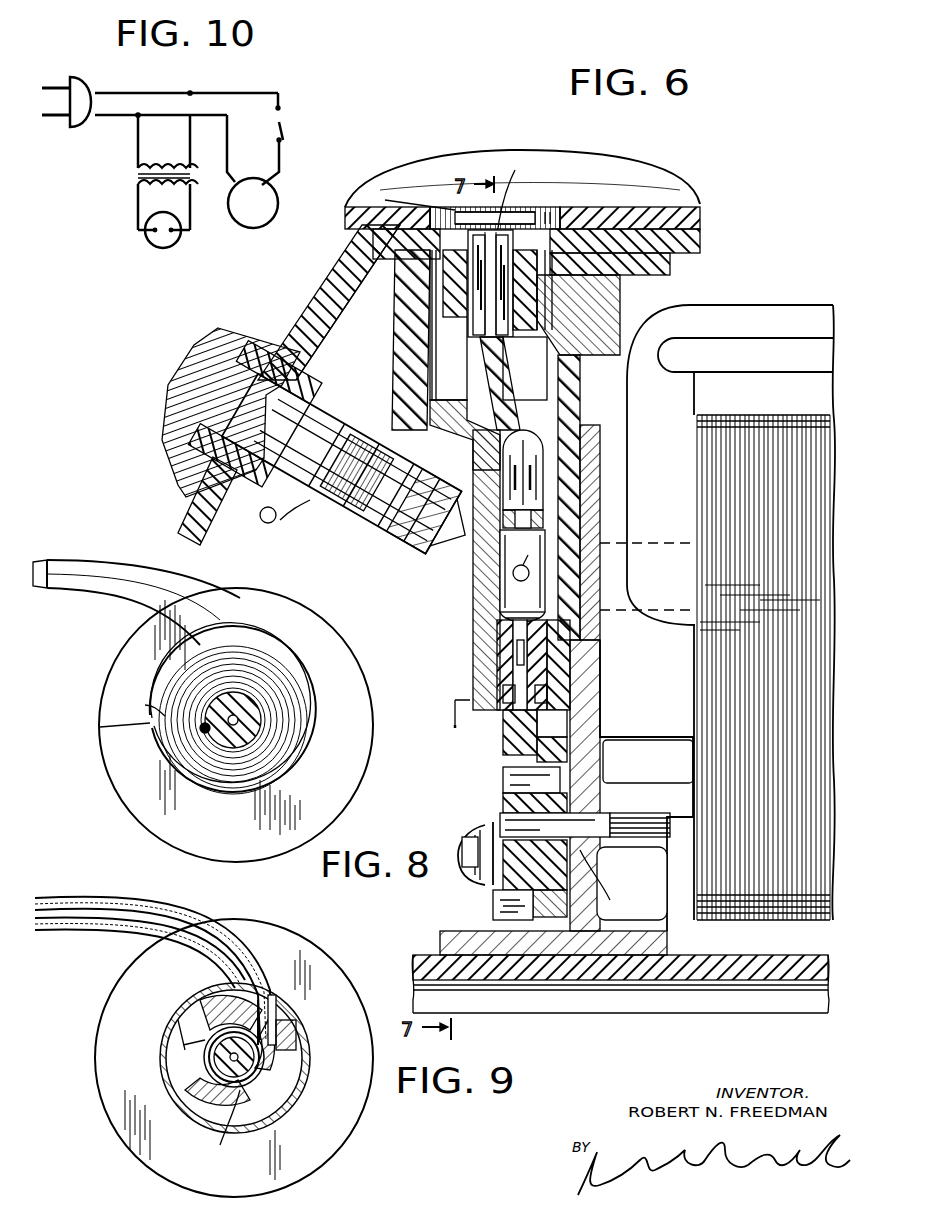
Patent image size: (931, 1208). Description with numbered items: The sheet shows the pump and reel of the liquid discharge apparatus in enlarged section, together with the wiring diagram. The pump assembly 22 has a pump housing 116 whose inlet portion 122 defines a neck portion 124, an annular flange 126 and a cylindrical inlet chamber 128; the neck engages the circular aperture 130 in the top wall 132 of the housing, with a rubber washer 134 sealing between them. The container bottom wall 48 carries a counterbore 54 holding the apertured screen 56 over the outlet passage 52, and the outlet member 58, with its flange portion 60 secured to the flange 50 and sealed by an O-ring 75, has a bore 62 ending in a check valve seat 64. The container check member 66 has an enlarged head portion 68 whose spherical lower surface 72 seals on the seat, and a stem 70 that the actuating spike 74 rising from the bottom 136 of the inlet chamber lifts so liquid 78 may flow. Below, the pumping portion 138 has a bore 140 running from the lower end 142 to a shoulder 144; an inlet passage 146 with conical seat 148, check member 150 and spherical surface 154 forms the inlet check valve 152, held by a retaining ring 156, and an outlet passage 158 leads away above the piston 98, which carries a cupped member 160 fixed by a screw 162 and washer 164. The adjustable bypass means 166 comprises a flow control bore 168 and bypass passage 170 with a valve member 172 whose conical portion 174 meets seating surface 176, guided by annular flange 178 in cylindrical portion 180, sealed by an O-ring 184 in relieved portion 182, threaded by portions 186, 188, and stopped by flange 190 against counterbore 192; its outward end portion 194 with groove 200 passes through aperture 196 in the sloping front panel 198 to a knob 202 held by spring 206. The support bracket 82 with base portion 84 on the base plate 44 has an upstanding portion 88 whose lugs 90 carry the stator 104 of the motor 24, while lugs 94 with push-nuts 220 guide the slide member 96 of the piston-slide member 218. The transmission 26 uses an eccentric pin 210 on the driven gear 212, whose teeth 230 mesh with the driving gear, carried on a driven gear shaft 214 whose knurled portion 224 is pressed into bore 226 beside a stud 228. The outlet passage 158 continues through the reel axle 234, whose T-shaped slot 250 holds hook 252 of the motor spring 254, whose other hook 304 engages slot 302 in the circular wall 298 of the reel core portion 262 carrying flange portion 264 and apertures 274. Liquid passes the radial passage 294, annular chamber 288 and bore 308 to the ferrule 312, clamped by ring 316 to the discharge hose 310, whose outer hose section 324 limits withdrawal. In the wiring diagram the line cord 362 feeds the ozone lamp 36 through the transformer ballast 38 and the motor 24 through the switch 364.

In FIG. 10, the line cord 362 is at (123, 100).
In FIG. 10, the switch 364 is at (288, 132).
In FIG. 10, the transformer ballast 38 is at (120, 174).
In FIG. 10, the ozone lamp 36 is at (145, 242).
In FIG. 10, the electric motor 24 is at (278, 195).
In FIG. 6, the liquid 78 is at (630, 165).
In FIG. 6, the bottom wall 48 is at (703, 215).
In FIG. 6, the apertured disk or screen 56 is at (515, 212).
In FIG. 6, the outlet bore or passage 52 is at (540, 214).
In FIG. 6, the counterbore 54 is at (570, 212).
In FIG. 6, the flange 50 is at (600, 212).
In FIG. 6, the container check member 66 is at (420, 193).
In FIG. 6, the enlarged head portion 68 is at (512, 192).
In FIG. 6, the check valve seat 64 is at (406, 244).
In FIG. 6, the top wall 132 is at (702, 240).
In FIG. 6, the circular aperture 130 is at (672, 264).
In FIG. 6, the neck portion 124 is at (608, 290).
In FIG. 6, the annular flange 126 is at (607, 312).
In FIG. 6, the inlet portion 122 is at (603, 336).
In FIG. 6, the pump assembly 22 is at (600, 358).
In FIG. 6, the conical seat 148 is at (603, 382).
In FIG. 6, the check member 150 is at (590, 410).
In FIG. 6, the upstanding portion 88 is at (590, 460).
In FIG. 6, the support bracket 82 is at (612, 668).
In FIG. 6, the inlet passage 146 is at (585, 442).
In FIG. 6, the pumping portion 138 is at (588, 490).
In FIG. 6, the retaining ring 156 is at (590, 512).
In FIG. 6, the motor support lugs 90 is at (606, 545).
In FIG. 6, the pump housing 116 is at (634, 380).
In FIG. 6, the stator 104 is at (740, 415).
In FIG. 6, the inlet chamber 128 is at (405, 352).
In FIG. 6, the cylindrical bore or passage 62 is at (448, 325).
In FIG. 6, the actuating spike or projection 74 is at (478, 372).
In FIG. 6, the inlet check valve 152 is at (465, 423).
In FIG. 6, the spherical lower surface 72 is at (395, 300).
In FIG. 6, the O-ring 75 is at (375, 330).
In FIG. 6, the outlet member 58 is at (507, 330).
In FIG. 6, the flange portion 60 is at (514, 320).
In FIG. 6, the stem 70 is at (526, 380).
In FIG. 6, the bottom of inlet chamber 136 is at (420, 410).
In FIG. 6, the cylindrical bore 140 is at (473, 675).
In FIG. 6, the spherical surface 154 is at (503, 478).
In FIG. 6, the shoulder 144 is at (503, 498).
In FIG. 6, the outlet passage 158 is at (522, 576).
In FIG. 8, the outlet passage 158 is at (265, 700).
In FIG. 9, the outlet passage 158 is at (210, 1063).
In FIG. 6, the screw 162 is at (521, 579).
In FIG. 6, the piston 98 is at (497, 646).
In FIG. 6, the adjustable bypass means 166 is at (473, 620).
In FIG. 6, the piston-slide member 218 is at (470, 690).
In FIG. 6, the teeth 230 is at (595, 718).
In FIG. 6, the lower end 142 is at (503, 730).
In FIG. 6, the slide member 96 is at (495, 740).
In FIG. 6, the eccentric driving pin 210 is at (503, 760).
In FIG. 6, the driven gear 212 is at (578, 775).
In FIG. 6, the aperture or bore 226 is at (655, 792).
In FIG. 6, the stud 228 is at (646, 785).
In FIG. 6, the knurled portion 224 is at (632, 883).
In FIG. 6, the driven gear shaft 214 is at (608, 884).
In FIG. 6, the slide bearing lugs 94 is at (462, 850).
In FIG. 6, the push-nuts 220 is at (470, 875).
In FIG. 6, the transmission 26 is at (470, 790).
In FIG. 6, the washer 164 is at (585, 620).
In FIG. 6, the upwardly cupped member 160 is at (600, 635).
In FIG. 6, the base portion 84 is at (670, 943).
In FIG. 6, the base plate 44 is at (725, 985).
In FIG. 6, the sloping front panel portion 198 is at (330, 252).
In FIG. 6, the rubber washer 134 is at (328, 276).
In FIG. 6, the aperture 196 is at (305, 325).
In FIG. 6, the outward end portion 194 is at (176, 362).
In FIG. 6, the groove or flattened portion 200 is at (215, 330).
In FIG. 6, the knob 202 is at (228, 330).
In FIG. 6, the spring 206 is at (242, 350).
In FIG. 6, the shoulder or counterbore 192 is at (212, 505).
In FIG. 6, the annular relieved portion 182 is at (325, 420).
In FIG. 6, the bypass bore or passage 170 is at (410, 425).
In FIG. 6, the valve member 172 is at (355, 525).
In FIG. 6, the conical portion 174 is at (461, 542).
In FIG. 6, the O-ring 184 is at (396, 525).
In FIG. 6, the stop flange 190 is at (261, 508).
In FIG. 6, the externally screw-threaded portion 186 is at (286, 520).
In FIG. 6, the internally screw-threaded portion 188 is at (318, 530).
In FIG. 6, the annular flange 178 is at (390, 570).
In FIG. 6, the cylindrical portion 180 is at (425, 575).
In FIG. 6, the flow control bore 168 is at (410, 580).
In FIG. 6, the conical seating surface 176 is at (470, 585).
In FIG. 8, the flange portion 264 is at (100, 787).
In FIG. 8, the circular wall 298 is at (238, 640).
In FIG. 8, the motor spring 254 is at (280, 712).
In FIG. 8, the reel axle 234 is at (270, 735).
In FIG. 8, the T-shaped slot 250 is at (234, 720).
In FIG. 8, the hook 252 is at (200, 732).
In FIG. 8, the slot 302 is at (100, 727).
In FIG. 8, the hook 304 is at (145, 705).
In FIG. 8, the outer hose section 324 is at (95, 562).
In FIG. 9, the outer hose section 324 is at (100, 898).
In FIG. 8, the discharge hose 310 is at (45, 560).
In FIG. 9, the discharge hose 310 is at (165, 917).
In FIG. 9, the core portion 262 is at (285, 1112).
In FIG. 9, the apertures 274 is at (212, 985).
In FIG. 9, the radial passage 294 is at (178, 1032).
In FIG. 9, the annular chamber 288 is at (231, 1124).
In FIG. 9, the ferrule 312 is at (280, 1003).
In FIG. 9, the hose clamp or ring 316 is at (282, 1010).
In FIG. 9, the outwardly extending bore 308 is at (300, 1030).